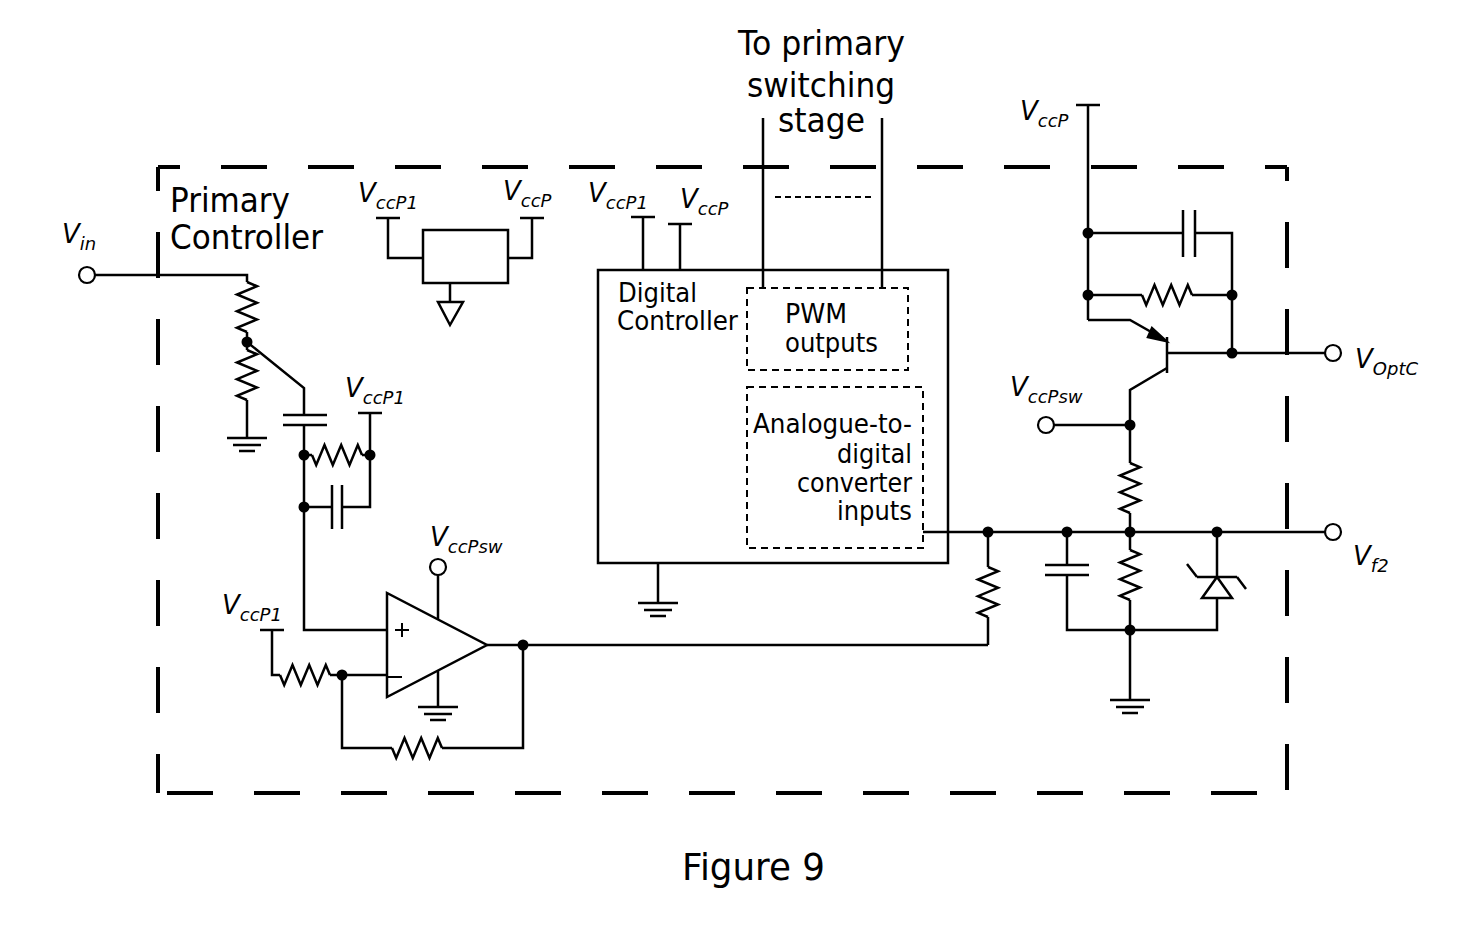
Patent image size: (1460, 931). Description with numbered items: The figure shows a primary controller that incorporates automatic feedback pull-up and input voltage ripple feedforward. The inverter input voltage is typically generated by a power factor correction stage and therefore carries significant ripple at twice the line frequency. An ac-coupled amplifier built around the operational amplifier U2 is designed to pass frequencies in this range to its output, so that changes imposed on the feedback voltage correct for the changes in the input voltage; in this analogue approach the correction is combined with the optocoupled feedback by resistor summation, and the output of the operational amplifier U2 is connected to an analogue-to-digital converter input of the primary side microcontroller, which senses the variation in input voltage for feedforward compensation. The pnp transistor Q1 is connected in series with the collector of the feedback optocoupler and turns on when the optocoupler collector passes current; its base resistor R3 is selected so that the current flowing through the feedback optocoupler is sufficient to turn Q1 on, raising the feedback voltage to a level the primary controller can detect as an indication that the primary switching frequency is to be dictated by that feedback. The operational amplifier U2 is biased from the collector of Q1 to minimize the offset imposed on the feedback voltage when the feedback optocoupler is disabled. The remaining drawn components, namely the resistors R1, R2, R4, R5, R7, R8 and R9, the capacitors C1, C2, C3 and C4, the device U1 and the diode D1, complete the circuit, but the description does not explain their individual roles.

The resistor R1 is at (1149, 581).
The resistor R2 is at (1149, 478).
The base resistor R3 is at (1160, 314).
The resistor R4 is at (227, 312).
The resistor R5 is at (306, 407).
The resistor R7 is at (307, 676).
The resistor R8 is at (392, 716).
The resistor R9 is at (968, 588).
The capacitor C1 is at (1077, 581).
The capacitor C2 is at (1160, 264).
The capacitor C3 is at (297, 418).
The capacitor C4 is at (341, 514).
The voltage regulator U1 is at (465, 260).
The operational amplifier U2 is at (437, 654).
The pnp transistor Q1 is at (1204, 372).
The zener diode D1 is at (1197, 584).